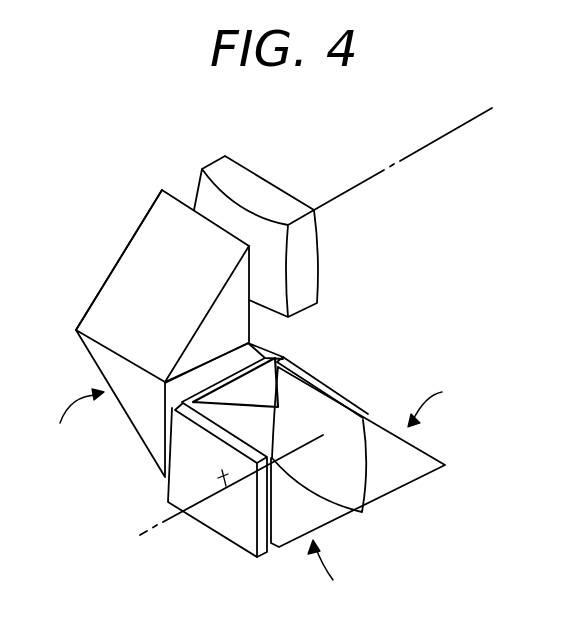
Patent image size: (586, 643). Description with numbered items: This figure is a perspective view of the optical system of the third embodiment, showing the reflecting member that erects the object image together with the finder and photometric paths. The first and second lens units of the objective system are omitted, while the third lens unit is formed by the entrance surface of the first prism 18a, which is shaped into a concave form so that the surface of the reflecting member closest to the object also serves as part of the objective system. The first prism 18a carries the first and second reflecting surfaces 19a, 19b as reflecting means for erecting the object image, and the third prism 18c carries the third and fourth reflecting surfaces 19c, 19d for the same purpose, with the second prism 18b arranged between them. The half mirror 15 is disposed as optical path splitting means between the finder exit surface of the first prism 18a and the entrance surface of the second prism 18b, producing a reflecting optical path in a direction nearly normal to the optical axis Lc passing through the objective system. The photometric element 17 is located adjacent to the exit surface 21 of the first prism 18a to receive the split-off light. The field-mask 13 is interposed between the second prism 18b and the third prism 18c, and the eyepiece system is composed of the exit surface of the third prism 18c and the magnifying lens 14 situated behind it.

The field-mask 13 is at (262, 345).
The magnifying lens 14 is at (235, 172).
The half mirror 15 is at (220, 402).
The photometric element 17 is at (222, 527).
The first prism 18a is at (392, 483).
The second prism 18b is at (312, 368).
The third prism 18c is at (113, 267).
The first reflecting surface 19a is at (445, 402).
The second reflecting surface 19b is at (334, 576).
The third reflecting surface 19c is at (59, 420).
The fourth reflecting surface 19d is at (158, 235).
The exit surface 21 is at (208, 417).
The optical axis Lc is at (266, 352).